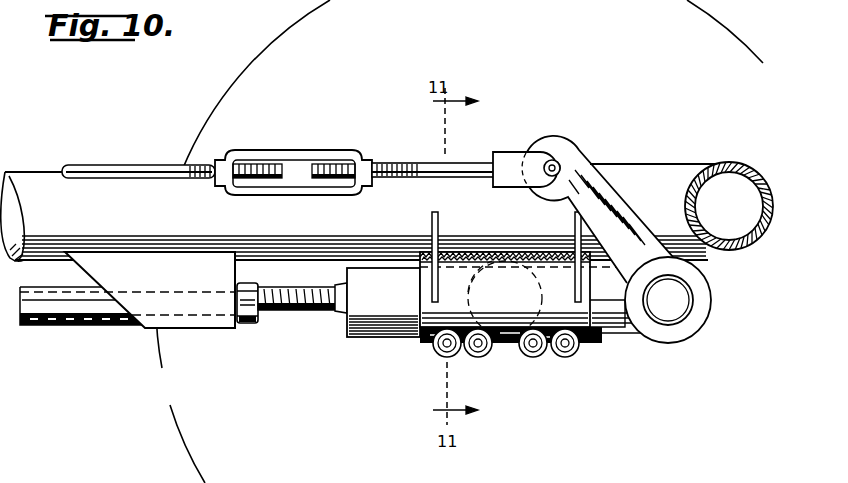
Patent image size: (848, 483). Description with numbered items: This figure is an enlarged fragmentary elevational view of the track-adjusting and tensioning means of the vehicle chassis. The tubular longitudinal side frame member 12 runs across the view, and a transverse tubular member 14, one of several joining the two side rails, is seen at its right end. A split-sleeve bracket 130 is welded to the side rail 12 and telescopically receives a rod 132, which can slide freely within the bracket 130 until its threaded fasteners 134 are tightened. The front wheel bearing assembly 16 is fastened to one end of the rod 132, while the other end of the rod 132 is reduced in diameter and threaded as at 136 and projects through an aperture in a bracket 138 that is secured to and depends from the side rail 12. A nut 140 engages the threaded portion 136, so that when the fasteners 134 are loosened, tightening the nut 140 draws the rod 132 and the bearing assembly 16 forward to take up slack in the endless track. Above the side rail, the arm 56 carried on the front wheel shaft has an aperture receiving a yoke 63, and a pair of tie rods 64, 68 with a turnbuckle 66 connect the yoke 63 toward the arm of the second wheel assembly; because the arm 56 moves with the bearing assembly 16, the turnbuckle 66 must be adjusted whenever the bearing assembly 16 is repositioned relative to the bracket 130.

The longitudinal side frame member 12 is at (42, 171).
The tie rod 68 is at (132, 165).
The turnbuckle 66 is at (297, 150).
The tie rod 64 is at (425, 163).
The yoke 63 is at (512, 160).
The arm 56 is at (558, 145).
The tubular member 14 is at (730, 163).
The front wheel bearing assembly 16 is at (688, 338).
The split-sleeve bracket 130 is at (421, 346).
The threaded fasteners 134 is at (562, 352).
The rod 132 is at (365, 330).
The threaded portion 136 is at (294, 312).
The nut 140 is at (250, 323).
The bracket 138 is at (186, 320).